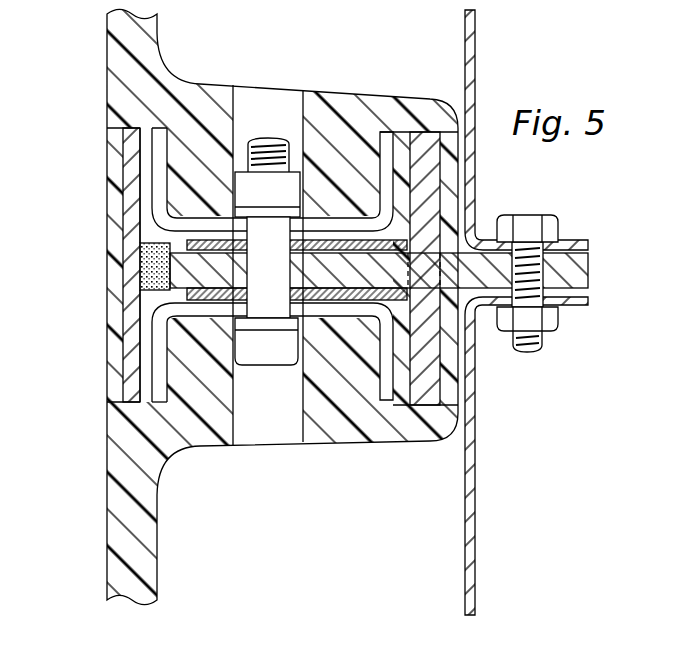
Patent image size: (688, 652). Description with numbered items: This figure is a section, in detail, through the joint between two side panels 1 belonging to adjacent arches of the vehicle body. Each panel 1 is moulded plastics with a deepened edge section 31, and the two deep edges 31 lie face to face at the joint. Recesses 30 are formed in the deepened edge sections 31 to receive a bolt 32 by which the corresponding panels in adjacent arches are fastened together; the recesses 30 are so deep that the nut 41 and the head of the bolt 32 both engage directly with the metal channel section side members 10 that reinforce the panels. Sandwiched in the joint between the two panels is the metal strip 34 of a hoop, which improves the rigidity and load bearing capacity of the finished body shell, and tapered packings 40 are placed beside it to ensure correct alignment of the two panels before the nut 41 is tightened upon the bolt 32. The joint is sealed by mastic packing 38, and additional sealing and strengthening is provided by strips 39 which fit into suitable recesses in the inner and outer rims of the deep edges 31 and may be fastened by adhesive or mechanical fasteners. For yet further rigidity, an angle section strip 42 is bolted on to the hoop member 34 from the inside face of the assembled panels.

The side panel 1 is at (92, 46).
The deepened edge section 31 is at (178, 84).
The strip 39 is at (132, 177).
The mastic packing 38 is at (140, 272).
The metal strip 34 is at (568, 268).
The tapered packing 40 is at (348, 305).
The side member 10 is at (377, 133).
The recess 30 is at (282, 115).
The nut 41 is at (243, 183).
The bolt 32 is at (270, 353).
The angle section strip 42 is at (477, 72).